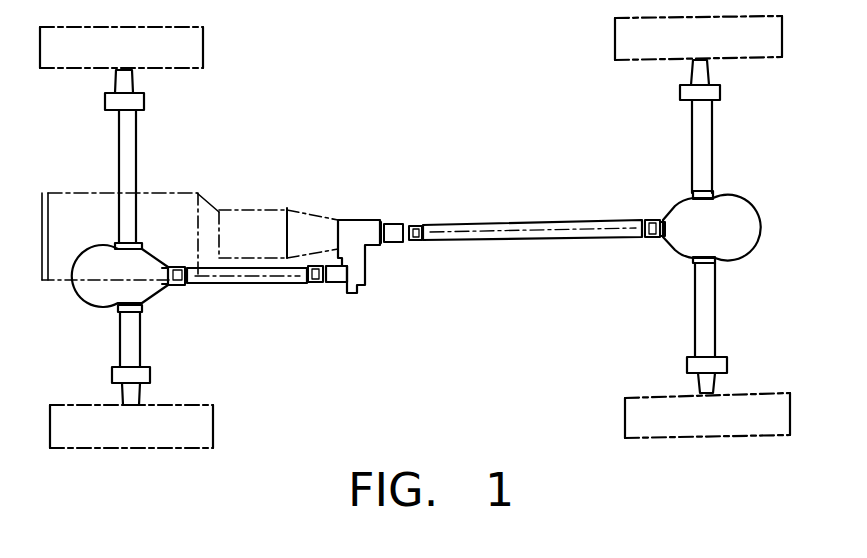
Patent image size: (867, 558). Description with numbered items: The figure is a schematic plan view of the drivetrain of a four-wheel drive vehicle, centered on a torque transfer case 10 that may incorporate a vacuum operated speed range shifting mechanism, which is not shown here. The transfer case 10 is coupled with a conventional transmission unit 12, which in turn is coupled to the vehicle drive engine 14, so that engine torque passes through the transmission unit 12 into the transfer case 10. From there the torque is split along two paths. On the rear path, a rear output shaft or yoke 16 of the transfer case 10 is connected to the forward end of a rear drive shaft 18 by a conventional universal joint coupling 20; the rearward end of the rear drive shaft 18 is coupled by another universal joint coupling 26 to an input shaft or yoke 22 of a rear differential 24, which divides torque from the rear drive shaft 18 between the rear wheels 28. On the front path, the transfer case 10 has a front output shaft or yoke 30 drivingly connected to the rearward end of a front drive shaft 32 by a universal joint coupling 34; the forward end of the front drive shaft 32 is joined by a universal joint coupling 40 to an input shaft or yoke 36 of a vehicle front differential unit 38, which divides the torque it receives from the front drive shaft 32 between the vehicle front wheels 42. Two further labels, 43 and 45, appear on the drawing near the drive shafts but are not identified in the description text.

The torque transfer case 10 is at (382, 214).
The transmission unit 12 is at (257, 210).
The vehicle drive engine 14 is at (173, 186).
The rear output shaft or yoke 16 is at (415, 224).
The rear drive shaft 18 is at (532, 232).
The universal joint coupling 20 is at (415, 241).
The input shaft or yoke 22 is at (653, 218).
The rear differential 24 is at (717, 222).
The universal joint coupling 26 is at (652, 238).
The rear wheels 28 is at (615, 45).
The front output shaft or yoke 30 is at (316, 284).
The front drive shaft 32 is at (297, 283).
The universal joint coupling 34 is at (308, 266).
The input shaft or yoke 36 is at (173, 287).
The vehicle front differential unit 38 is at (118, 294).
The universal joint coupling 40 is at (177, 264).
The vehicle front wheels 42 is at (203, 43).
The drive shaft tube 43 is at (552, 232).
The rear drive shaft 45 is at (212, 285).